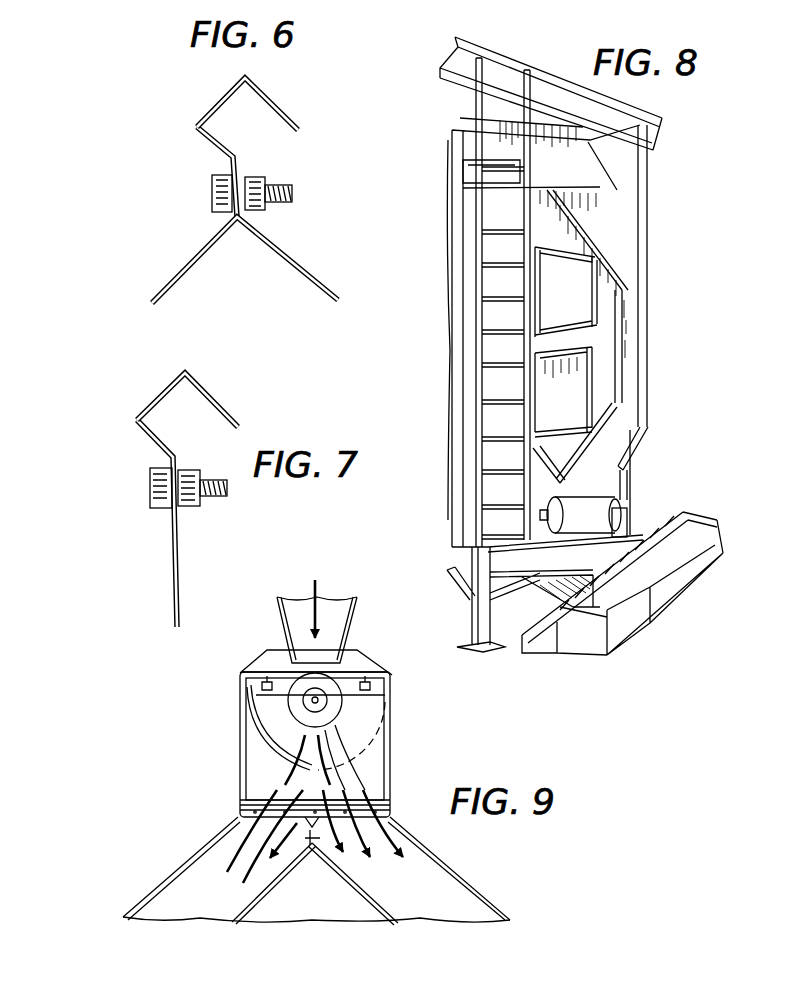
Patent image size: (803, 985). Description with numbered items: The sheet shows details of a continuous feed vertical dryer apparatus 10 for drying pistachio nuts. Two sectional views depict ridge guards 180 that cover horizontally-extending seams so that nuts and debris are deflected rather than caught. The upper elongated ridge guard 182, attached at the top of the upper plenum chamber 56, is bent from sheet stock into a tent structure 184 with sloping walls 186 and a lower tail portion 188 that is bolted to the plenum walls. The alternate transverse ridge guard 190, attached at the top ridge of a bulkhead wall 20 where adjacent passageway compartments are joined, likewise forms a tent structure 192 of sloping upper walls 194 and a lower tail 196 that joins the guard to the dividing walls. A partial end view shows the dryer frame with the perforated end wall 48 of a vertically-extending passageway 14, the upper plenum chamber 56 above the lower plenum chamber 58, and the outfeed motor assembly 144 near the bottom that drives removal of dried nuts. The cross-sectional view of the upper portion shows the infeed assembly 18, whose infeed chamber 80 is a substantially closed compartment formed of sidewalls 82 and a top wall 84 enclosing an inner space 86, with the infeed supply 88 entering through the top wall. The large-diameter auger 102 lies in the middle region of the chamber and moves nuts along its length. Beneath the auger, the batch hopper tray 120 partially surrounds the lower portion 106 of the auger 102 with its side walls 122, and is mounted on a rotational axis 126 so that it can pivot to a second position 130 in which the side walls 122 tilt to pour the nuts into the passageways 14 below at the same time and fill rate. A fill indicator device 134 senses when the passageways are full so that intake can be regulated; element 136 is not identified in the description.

In FIG. 8, the continuous feed vertical dryer apparatus 10 is at (693, 393).
In FIG. 8, the vertically-extending passageway 14 is at (632, 318).
In FIG. 9, the vertically-extending passageway 14 is at (440, 887).
In FIG. 9, the infeed assembly 18 is at (399, 697).
In FIG. 9, the bulkhead wall 20 is at (378, 907).
In FIG. 8, the end wall 48 is at (630, 363).
In FIG. 8, the upper plenum chamber 56 is at (557, 272).
In FIG. 8, the lower plenum chamber 58 is at (563, 398).
In FIG. 9, the infeed chamber 80 is at (260, 770).
In FIG. 8, the sidewall 82 is at (497, 134).
In FIG. 9, the sidewall 82 is at (240, 750).
In FIG. 9, the top wall 84 is at (360, 660).
In FIG. 9, the inner space 86 is at (256, 747).
In FIG. 9, the infeed supply 88 is at (295, 617).
In FIG. 9, the auger 102 is at (399, 698).
In FIG. 9, the lower portion of the auger 106 is at (340, 720).
In FIG. 9, the batch hopper tray 120 is at (292, 695).
In FIG. 9, the side wall of the hopper tray 122 is at (243, 687).
In FIG. 9, the rotational axis 126 is at (313, 698).
In FIG. 9, the second position 130 is at (247, 676).
In FIG. 9, the fill indicator device 134 is at (258, 854).
In FIG. 9, the grain flow path 136 is at (241, 844).
In FIG. 8, the outfeed motor assembly 144 is at (577, 505).
In FIG. 6, the ridge guard 180 is at (156, 111).
In FIG. 7, the ridge guard 180 is at (98, 397).
In FIG. 6, the upper elongated ridge guard 182 is at (217, 143).
In FIG. 6, the tent structure 184 is at (257, 125).
In FIG. 6, the sloping wall 186 is at (263, 92).
In FIG. 6, the lower tail portion 188 is at (220, 175).
In FIG. 7, the transverse ridge guard 190 is at (158, 445).
In FIG. 7, the tent structure 192 is at (212, 428).
In FIG. 7, the sloping upper wall 194 is at (210, 392).
In FIG. 7, the lower tail 196 is at (177, 517).